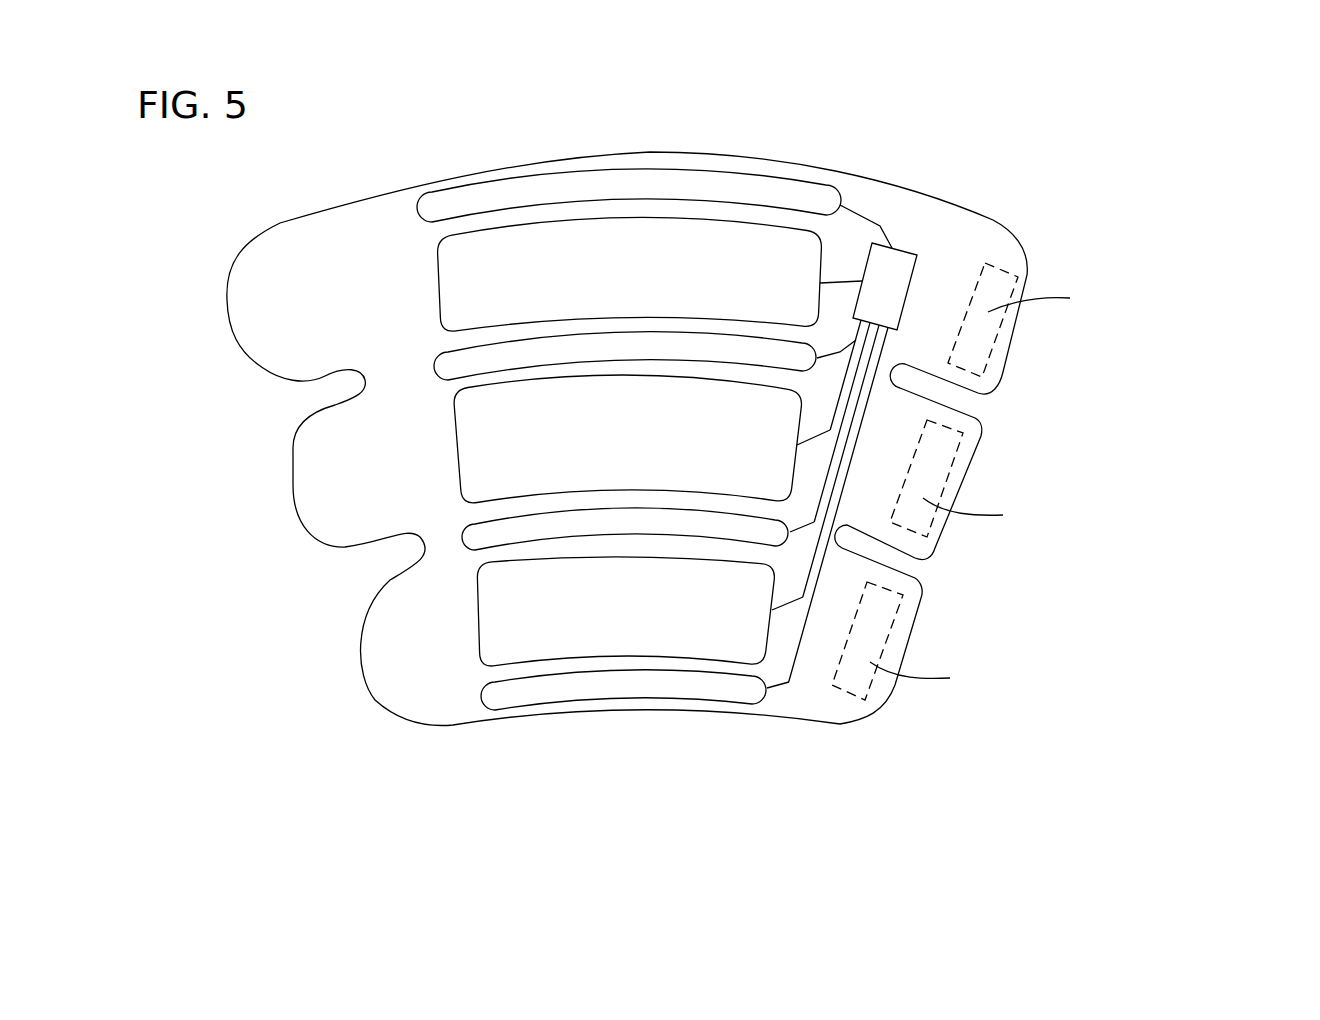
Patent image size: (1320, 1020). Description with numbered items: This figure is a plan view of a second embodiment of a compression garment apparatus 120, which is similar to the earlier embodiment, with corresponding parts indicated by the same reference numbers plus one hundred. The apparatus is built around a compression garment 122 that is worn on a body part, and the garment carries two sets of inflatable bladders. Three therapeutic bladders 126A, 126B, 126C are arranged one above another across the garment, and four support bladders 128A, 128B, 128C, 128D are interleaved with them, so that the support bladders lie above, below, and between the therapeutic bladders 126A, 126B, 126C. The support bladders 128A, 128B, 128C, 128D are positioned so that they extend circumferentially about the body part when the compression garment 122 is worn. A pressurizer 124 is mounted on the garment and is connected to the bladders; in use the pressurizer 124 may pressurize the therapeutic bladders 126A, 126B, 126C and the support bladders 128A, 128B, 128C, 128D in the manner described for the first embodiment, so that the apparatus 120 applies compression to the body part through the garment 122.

The compression garment apparatus 120 is at (1003, 157).
The compression garment 122 is at (870, 178).
The pressurizer 124 is at (923, 258).
The therapeutic bladder 126A is at (562, 633).
The therapeutic bladder 126B is at (488, 452).
The therapeutic bladder 126C is at (532, 245).
The support bladder 128A is at (708, 690).
The support bladder 128B is at (473, 533).
The support bladder 128C is at (448, 360).
The support bladder 128D is at (650, 185).